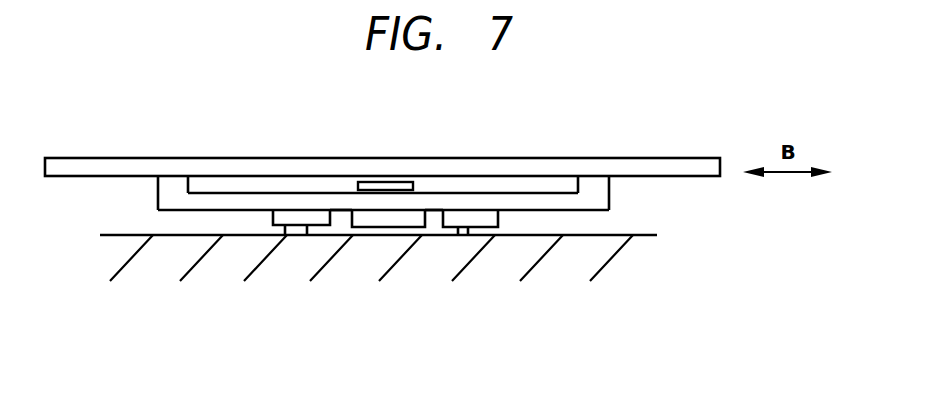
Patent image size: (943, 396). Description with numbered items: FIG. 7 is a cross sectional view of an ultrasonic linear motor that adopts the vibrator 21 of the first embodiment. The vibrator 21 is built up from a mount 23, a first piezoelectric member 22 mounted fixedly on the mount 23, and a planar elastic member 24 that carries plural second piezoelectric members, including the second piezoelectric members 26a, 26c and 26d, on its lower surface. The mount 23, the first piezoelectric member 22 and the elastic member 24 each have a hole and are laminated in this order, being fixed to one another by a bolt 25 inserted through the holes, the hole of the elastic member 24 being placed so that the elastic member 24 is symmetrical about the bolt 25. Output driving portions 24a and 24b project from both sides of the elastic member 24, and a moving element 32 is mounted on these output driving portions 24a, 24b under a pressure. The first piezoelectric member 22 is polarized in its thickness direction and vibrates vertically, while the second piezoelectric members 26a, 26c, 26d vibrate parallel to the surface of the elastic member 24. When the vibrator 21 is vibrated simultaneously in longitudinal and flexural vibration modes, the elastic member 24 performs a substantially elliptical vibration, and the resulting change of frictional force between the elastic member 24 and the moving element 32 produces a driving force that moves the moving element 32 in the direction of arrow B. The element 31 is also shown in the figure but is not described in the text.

The vibrator 21 is at (252, 205).
The first piezoelectric member 22 is at (342, 213).
The mount 23 is at (572, 248).
The elastic member 24 is at (327, 205).
The output driving portion 24a is at (595, 186).
The output driving portion 24b is at (172, 185).
The bolt 25 is at (389, 182).
The second piezoelectric member 26a is at (465, 235).
The second piezoelectric member 26c is at (283, 237).
The second piezoelectric member 26d is at (407, 222).
The adhesive layer 31 is at (447, 207).
The moving element 32 is at (682, 170).